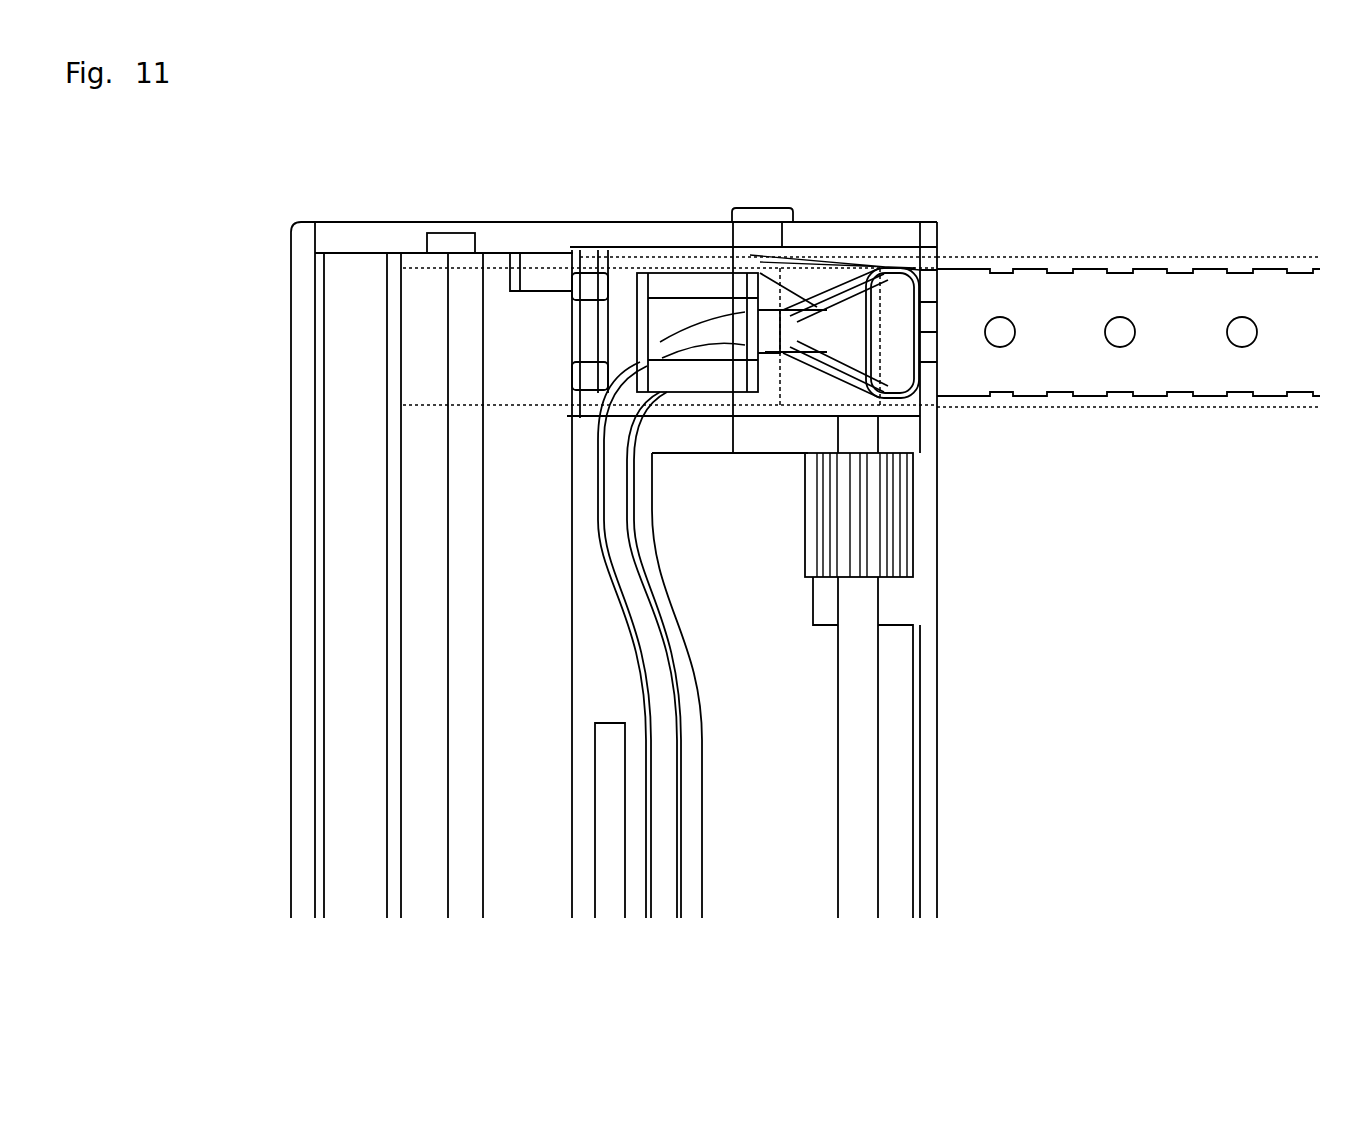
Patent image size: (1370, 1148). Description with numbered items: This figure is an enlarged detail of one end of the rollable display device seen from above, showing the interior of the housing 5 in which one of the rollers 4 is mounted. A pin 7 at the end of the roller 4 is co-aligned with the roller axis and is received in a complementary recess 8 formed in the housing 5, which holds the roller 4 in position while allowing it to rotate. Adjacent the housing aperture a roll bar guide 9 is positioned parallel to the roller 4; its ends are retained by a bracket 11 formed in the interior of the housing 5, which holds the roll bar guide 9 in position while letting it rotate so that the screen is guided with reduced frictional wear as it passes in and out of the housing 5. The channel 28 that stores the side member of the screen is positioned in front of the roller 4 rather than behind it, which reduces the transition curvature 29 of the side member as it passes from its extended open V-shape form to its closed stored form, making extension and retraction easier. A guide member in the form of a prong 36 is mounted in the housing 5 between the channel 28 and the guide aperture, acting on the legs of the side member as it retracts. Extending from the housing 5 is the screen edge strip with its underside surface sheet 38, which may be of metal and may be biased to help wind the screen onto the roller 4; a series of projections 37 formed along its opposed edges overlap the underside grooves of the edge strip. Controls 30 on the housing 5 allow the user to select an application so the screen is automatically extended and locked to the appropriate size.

The roller 4 is at (425, 739).
The housing 5 is at (338, 237).
The pin 7 is at (465, 250).
The recess 8 is at (438, 232).
The roll bar guide 9 is at (888, 548).
The bracket 11 is at (908, 437).
The channel 28 is at (688, 333).
The transition curvature 29 is at (878, 265).
The controls 30 is at (773, 210).
The prong 36 is at (888, 302).
The projections 37 is at (1135, 269).
The underside surface sheet 38 is at (1162, 342).